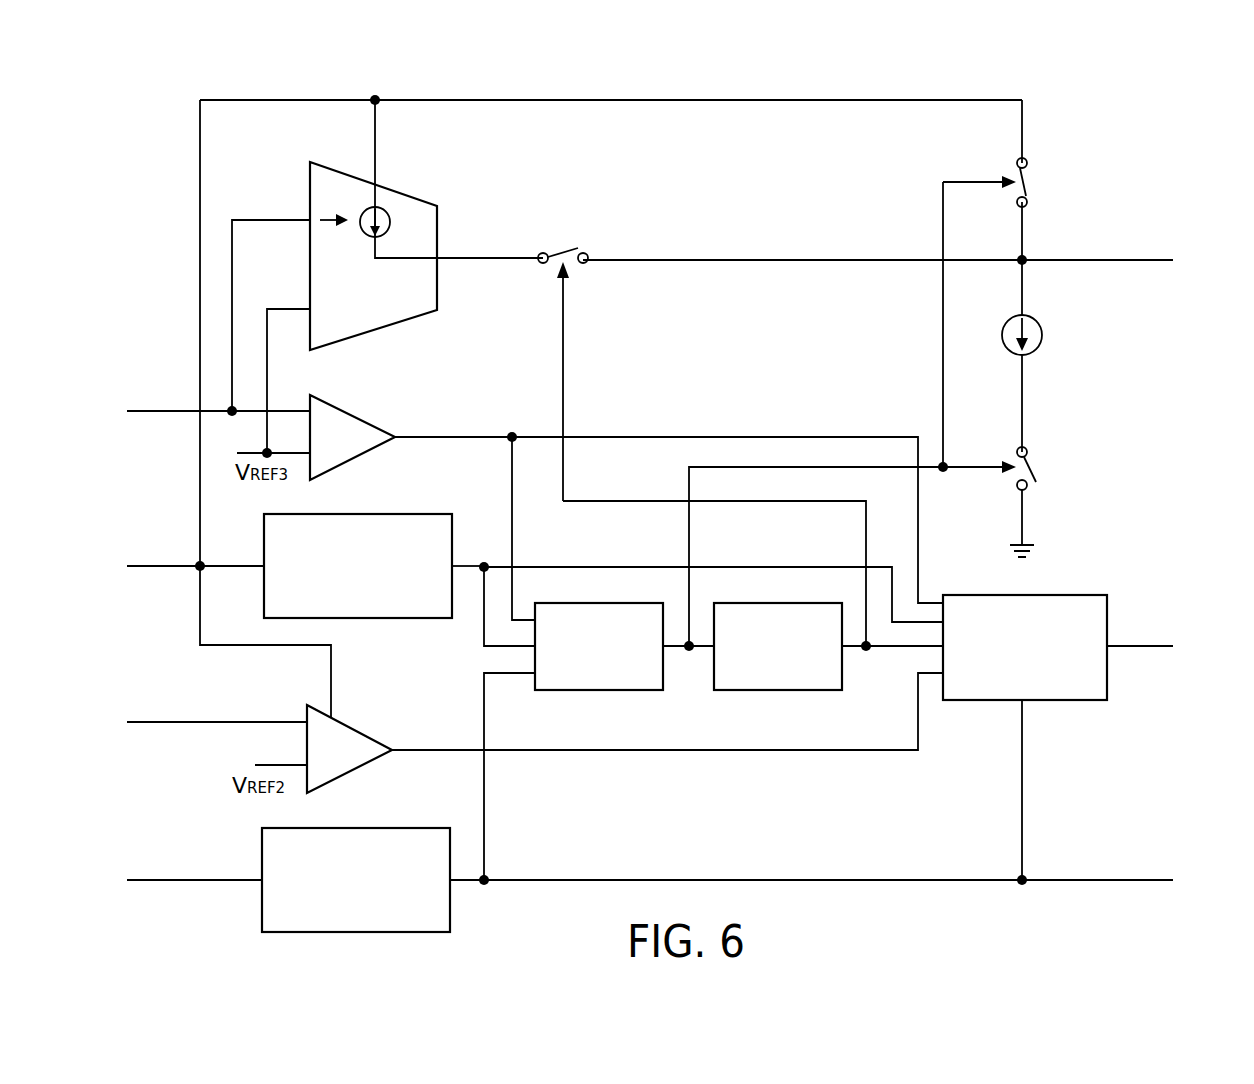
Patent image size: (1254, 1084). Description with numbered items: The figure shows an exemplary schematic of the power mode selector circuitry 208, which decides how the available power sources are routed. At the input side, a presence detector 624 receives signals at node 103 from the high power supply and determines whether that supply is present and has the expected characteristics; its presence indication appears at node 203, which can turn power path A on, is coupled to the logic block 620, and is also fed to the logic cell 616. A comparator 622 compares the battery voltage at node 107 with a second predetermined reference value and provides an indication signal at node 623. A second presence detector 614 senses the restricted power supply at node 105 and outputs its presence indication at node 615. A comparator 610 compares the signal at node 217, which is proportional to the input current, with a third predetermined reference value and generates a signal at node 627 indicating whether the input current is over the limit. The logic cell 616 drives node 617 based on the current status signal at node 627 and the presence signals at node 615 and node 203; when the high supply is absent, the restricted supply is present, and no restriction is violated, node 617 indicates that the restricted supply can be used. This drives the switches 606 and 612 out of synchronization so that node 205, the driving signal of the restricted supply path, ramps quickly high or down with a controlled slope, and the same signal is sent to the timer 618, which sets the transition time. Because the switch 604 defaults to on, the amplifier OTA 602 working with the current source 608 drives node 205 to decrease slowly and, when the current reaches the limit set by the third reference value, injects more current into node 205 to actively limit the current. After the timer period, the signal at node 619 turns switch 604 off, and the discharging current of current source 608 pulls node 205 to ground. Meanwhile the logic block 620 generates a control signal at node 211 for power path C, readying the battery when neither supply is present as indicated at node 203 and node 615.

The power mode selector circuitry 208 is at (1158, 80).
The amplifier OTA 602 is at (410, 190).
The switch 604 is at (563, 252).
The switch 606 is at (1030, 180).
The current source 608 is at (1042, 332).
The switch 612 is at (1040, 470).
The node 205 is at (1145, 260).
The node 217 is at (150, 411).
The comparator 610 is at (340, 403).
The presence detector 614 is at (392, 514).
The node 615 is at (527, 567).
The logic cell 616 is at (600, 690).
The node 617 is at (943, 318).
The timer 618 is at (770, 690).
The node 619 is at (827, 501).
The logic block 620 is at (1043, 700).
The comparator 622 is at (360, 725).
The node 623 is at (728, 752).
The presence detector 624 is at (383, 828).
The node 627 is at (680, 440).
The node 105 is at (150, 566).
The node 107 is at (160, 722).
The node 103 is at (160, 880).
The node 211 is at (1135, 646).
The node 203 is at (1095, 880).